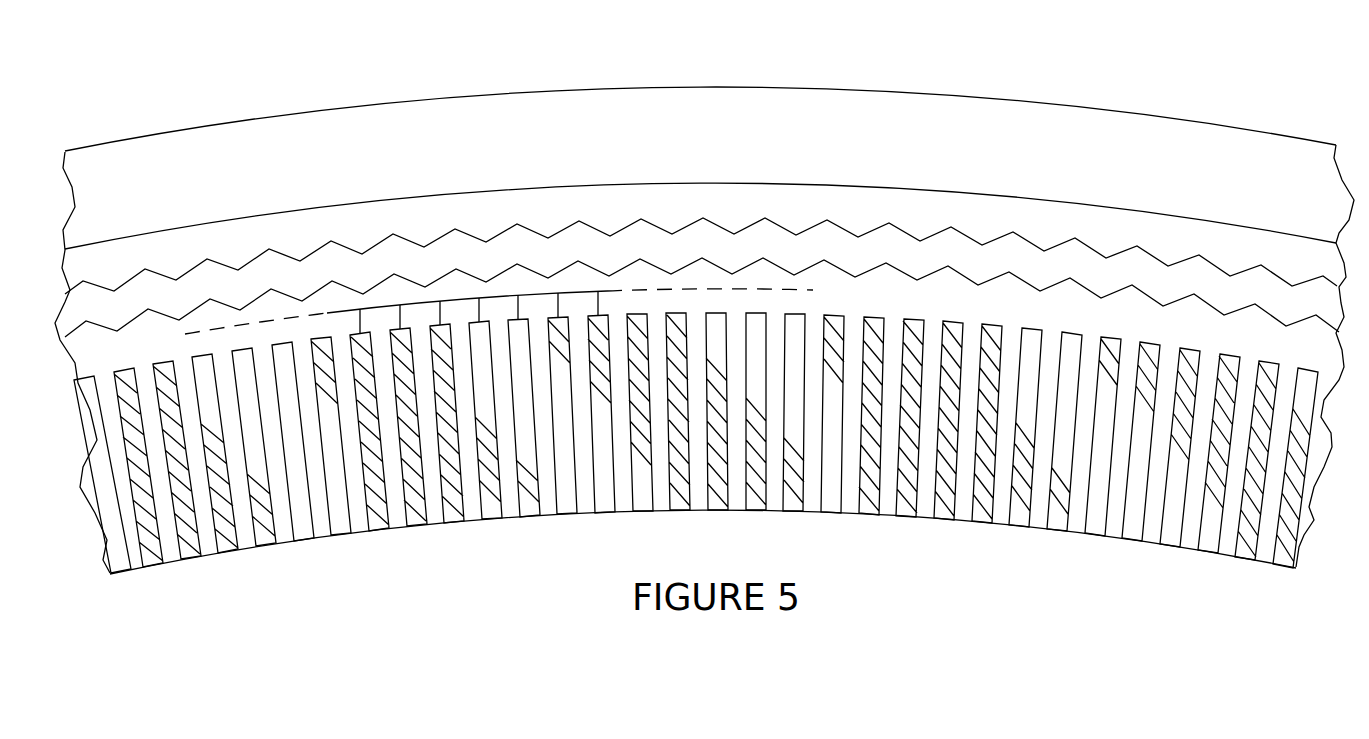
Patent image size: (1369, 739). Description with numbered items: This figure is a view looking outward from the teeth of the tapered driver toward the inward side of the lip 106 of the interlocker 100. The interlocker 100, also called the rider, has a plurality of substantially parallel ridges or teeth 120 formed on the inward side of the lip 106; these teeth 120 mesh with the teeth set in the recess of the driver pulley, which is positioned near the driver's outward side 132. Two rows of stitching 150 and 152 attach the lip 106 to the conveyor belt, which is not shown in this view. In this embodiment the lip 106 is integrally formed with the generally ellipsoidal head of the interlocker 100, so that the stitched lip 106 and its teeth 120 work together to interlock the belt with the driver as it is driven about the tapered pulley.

The interlocker 100 is at (909, 557).
The lip 106 is at (1302, 535).
The teeth 120 is at (327, 315).
The outward side 132 is at (600, 512).
The row of stitching 150 is at (1117, 290).
The row of stitching 152 is at (930, 230).